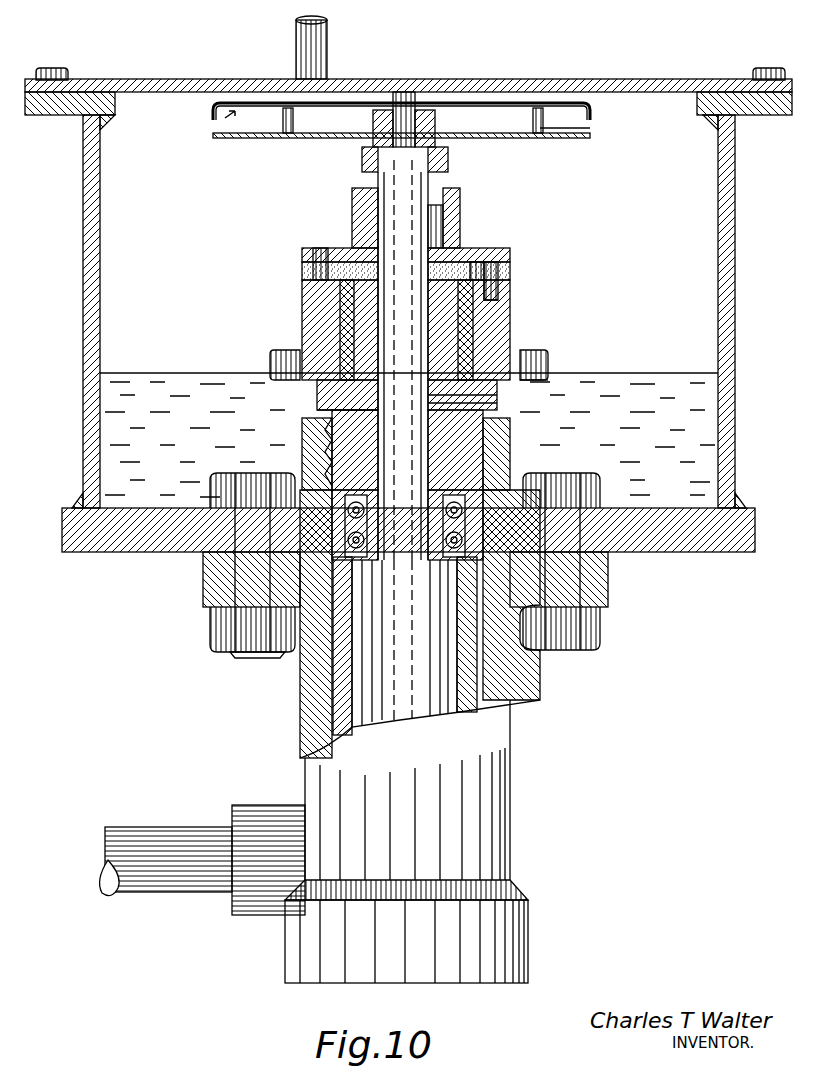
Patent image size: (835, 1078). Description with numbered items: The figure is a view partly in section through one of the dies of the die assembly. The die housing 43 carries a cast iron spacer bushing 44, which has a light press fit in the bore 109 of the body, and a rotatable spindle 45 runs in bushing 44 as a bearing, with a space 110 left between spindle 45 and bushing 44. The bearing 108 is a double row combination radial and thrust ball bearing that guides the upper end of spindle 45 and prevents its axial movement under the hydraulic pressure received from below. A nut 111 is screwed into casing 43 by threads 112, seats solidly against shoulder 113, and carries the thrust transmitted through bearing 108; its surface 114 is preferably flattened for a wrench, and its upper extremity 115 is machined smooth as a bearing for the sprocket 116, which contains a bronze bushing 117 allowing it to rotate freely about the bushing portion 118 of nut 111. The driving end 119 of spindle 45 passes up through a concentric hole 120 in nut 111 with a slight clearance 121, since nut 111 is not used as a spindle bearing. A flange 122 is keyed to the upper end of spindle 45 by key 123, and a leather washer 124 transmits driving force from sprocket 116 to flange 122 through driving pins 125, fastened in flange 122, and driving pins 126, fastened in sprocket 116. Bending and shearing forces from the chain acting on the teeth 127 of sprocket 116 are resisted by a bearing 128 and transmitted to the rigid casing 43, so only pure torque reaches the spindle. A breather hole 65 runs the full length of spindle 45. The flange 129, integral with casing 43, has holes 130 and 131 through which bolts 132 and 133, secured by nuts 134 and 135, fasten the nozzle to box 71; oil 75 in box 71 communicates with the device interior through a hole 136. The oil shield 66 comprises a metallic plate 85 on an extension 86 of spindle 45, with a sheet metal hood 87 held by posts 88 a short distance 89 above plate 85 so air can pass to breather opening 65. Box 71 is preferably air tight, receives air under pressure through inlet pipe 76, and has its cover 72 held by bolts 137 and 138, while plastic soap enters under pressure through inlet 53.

The die housing 43 is at (450, 850).
The spacer bushing 44 is at (470, 690).
The spindle 45 is at (390, 690).
The inlet 53 is at (104, 880).
The breather hole 65 is at (405, 110).
The oil shield 66 is at (225, 118).
The box 71 is at (90, 317).
The cover 72 is at (200, 84).
The oil 75 is at (135, 372).
The inlet pipe 76 is at (296, 32).
The metallic plate 85 is at (565, 140).
The extension 86 is at (448, 164).
The sheet metal hood 87 is at (215, 105).
The posts 88 is at (293, 118).
The narrow annular opening 89 is at (590, 128).
The bearing 108 is at (508, 475).
The bore 109 is at (483, 655).
The space 110 is at (310, 735).
The nut 111 is at (320, 410).
The threads 112 is at (322, 462).
The shoulder 113 is at (315, 435).
The surface 114 is at (318, 388).
The upper extremity 115 is at (490, 393).
The sprocket 116 is at (535, 355).
The bronze bushing 117 is at (470, 346).
The bushing portion 118 is at (468, 327).
The driving end 119 is at (400, 203).
The concentric hole 120 is at (322, 300).
The clearance 121 is at (345, 345).
The flange 122 is at (480, 252).
The key 123 is at (436, 222).
The leather washer 124 is at (510, 268).
The driving pins 125 is at (322, 262).
The driving pins 126 is at (512, 290).
The teeth 127 is at (545, 372).
The bearing 128 is at (360, 316).
The flange 129 is at (240, 583).
The hole 130 is at (210, 602).
The hole 131 is at (575, 580).
The bolt 132 is at (225, 490).
The bolt 133 is at (598, 488).
The nut 134 is at (220, 655).
The nut 135 is at (600, 640).
The hole 136 is at (475, 403).
The bolt 137 is at (36, 68).
The bolt 138 is at (768, 68).